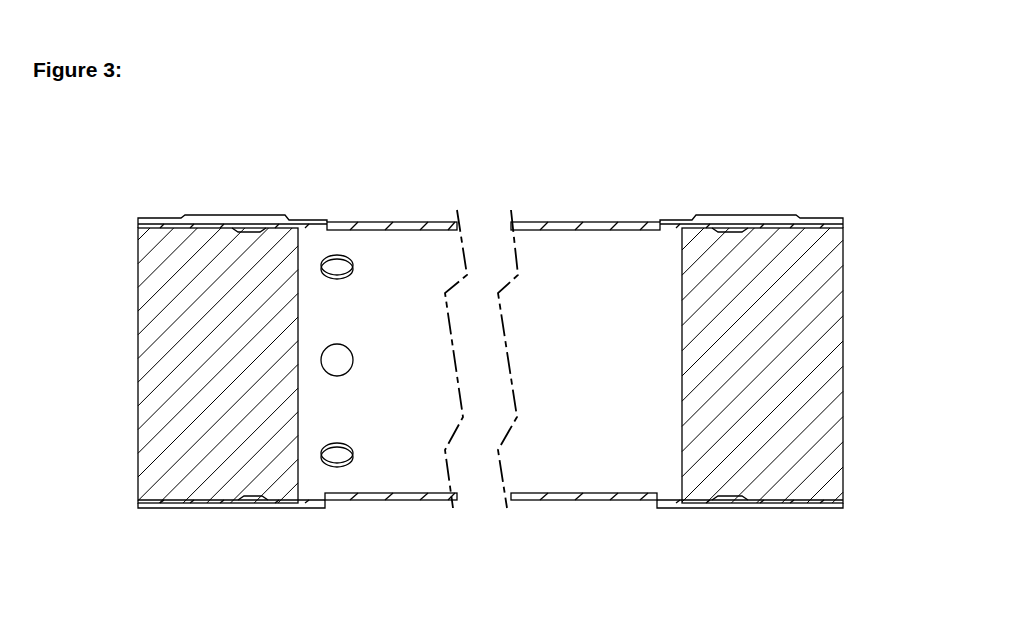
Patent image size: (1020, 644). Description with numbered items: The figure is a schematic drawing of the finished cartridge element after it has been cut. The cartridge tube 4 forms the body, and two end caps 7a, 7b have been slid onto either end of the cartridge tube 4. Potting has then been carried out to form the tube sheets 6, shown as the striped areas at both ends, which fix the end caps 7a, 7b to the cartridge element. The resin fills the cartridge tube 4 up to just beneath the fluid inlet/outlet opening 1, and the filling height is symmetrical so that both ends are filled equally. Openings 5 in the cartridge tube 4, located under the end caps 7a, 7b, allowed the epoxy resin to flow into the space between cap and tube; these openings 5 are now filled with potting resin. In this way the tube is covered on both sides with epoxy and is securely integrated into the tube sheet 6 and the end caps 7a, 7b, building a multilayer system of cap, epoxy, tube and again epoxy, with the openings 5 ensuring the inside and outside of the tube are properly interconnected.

The fluid inlet/outlet opening 1 is at (342, 460).
The cartridge tube 4 is at (576, 500).
The openings filled with potting resin 5 is at (486, 364).
The tube sheet 6 is at (138, 460).
The end cap 7a is at (155, 222).
The end cap 7b is at (826, 222).